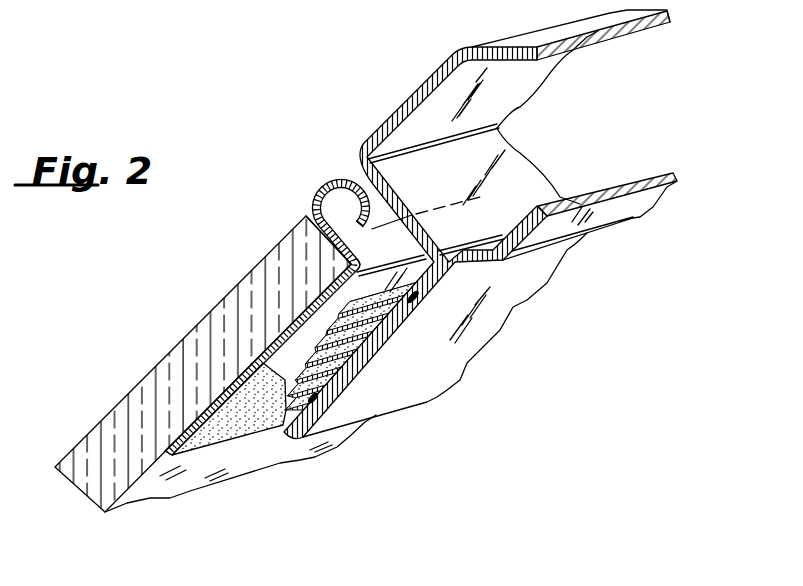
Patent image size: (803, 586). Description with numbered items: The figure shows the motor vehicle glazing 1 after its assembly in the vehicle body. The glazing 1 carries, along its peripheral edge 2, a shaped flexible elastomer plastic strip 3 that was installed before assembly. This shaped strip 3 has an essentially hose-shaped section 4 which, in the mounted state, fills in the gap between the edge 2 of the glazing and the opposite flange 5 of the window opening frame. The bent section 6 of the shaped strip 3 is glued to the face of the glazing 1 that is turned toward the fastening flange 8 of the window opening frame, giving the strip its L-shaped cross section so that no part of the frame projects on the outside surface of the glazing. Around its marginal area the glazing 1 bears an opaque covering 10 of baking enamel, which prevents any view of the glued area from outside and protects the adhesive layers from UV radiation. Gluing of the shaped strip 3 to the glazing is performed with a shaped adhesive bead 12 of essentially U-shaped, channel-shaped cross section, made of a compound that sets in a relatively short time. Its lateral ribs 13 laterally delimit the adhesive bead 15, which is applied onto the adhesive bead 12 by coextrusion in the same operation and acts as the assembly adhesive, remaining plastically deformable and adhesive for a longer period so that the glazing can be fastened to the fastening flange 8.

The glazing 1 is at (116, 409).
The peripheral edge 2 is at (316, 237).
The shaped strip 3 is at (310, 202).
The hose-shaped section 4 is at (355, 187).
The opposite flange 5 is at (388, 172).
The bent section 6 is at (330, 288).
The fastening flange 8 is at (352, 370).
The opaque covering 10 is at (230, 422).
The shaped adhesive bead 12 is at (263, 347).
The lateral ribs 13 is at (284, 385).
The adhesive bead 15 is at (352, 320).